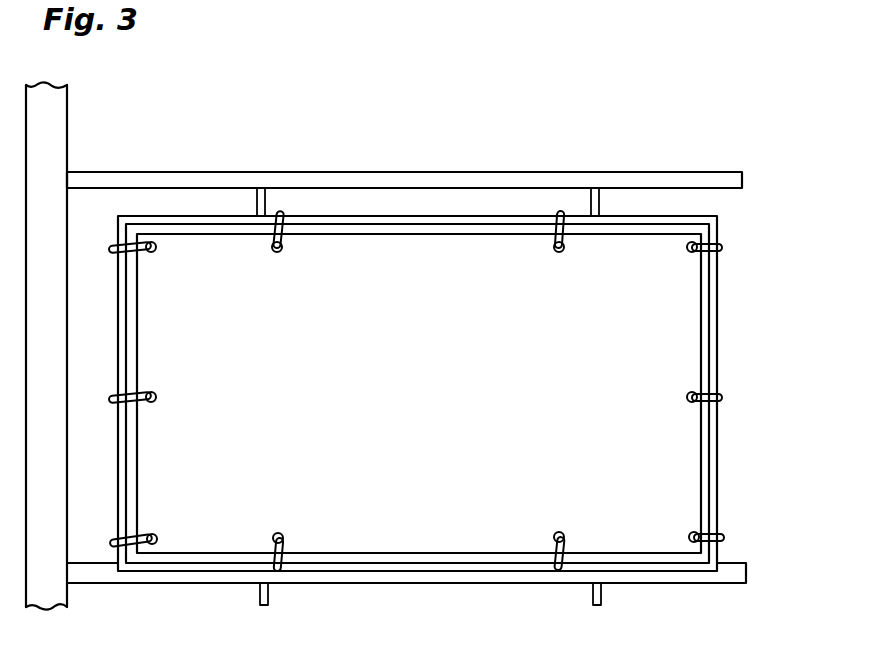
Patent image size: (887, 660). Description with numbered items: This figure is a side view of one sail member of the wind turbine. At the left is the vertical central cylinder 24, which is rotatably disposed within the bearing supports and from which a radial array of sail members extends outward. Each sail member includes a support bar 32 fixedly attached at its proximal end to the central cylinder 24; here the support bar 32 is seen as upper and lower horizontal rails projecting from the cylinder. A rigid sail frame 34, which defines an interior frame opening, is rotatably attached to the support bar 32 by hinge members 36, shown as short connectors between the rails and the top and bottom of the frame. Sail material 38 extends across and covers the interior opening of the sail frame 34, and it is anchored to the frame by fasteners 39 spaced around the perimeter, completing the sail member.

The central cylinder 24 is at (55, 133).
The support bar 32 is at (150, 178).
The sail frame 34 is at (718, 218).
The hinge members 36 is at (265, 197).
The sail material 38 is at (430, 347).
The fasteners 39 is at (275, 237).